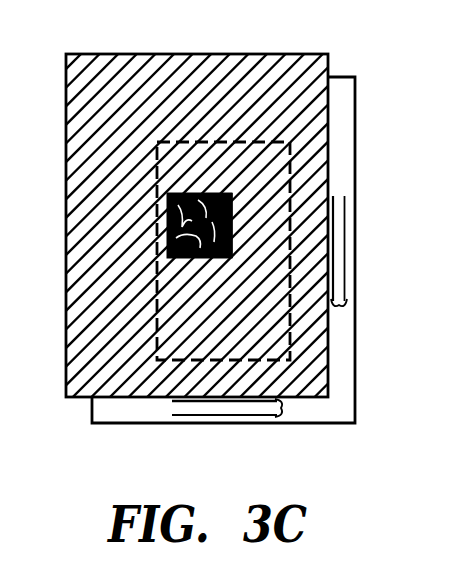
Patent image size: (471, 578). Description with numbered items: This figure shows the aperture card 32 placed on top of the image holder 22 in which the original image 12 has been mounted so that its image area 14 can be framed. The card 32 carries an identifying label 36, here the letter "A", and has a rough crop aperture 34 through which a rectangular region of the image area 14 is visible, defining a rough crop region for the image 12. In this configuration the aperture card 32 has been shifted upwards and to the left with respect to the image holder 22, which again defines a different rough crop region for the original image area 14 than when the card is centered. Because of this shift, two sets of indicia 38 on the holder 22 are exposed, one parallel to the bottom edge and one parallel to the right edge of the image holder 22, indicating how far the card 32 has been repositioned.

The image 12 is at (262, 141).
The image area 14 is at (167, 227).
The image holder 22 is at (352, 188).
The aperture card 32 is at (152, 77).
The rough crop aperture 34 is at (232, 258).
The identifying label 36 is at (185, 366).
The indicia 38 is at (342, 308).